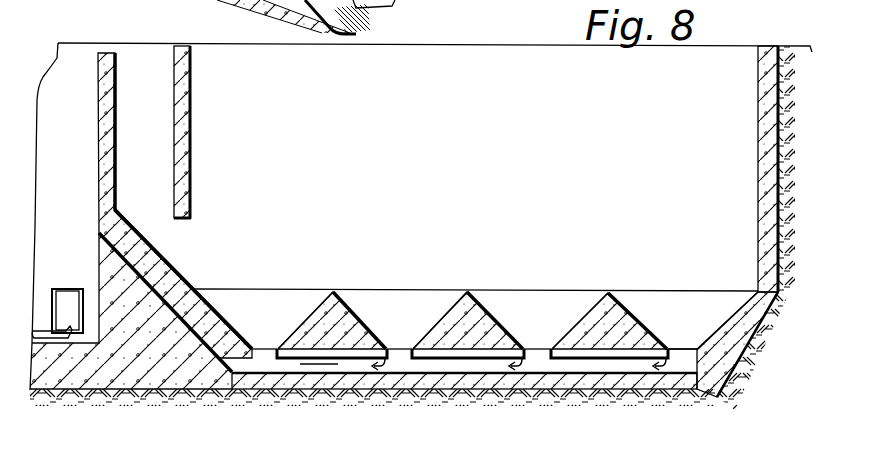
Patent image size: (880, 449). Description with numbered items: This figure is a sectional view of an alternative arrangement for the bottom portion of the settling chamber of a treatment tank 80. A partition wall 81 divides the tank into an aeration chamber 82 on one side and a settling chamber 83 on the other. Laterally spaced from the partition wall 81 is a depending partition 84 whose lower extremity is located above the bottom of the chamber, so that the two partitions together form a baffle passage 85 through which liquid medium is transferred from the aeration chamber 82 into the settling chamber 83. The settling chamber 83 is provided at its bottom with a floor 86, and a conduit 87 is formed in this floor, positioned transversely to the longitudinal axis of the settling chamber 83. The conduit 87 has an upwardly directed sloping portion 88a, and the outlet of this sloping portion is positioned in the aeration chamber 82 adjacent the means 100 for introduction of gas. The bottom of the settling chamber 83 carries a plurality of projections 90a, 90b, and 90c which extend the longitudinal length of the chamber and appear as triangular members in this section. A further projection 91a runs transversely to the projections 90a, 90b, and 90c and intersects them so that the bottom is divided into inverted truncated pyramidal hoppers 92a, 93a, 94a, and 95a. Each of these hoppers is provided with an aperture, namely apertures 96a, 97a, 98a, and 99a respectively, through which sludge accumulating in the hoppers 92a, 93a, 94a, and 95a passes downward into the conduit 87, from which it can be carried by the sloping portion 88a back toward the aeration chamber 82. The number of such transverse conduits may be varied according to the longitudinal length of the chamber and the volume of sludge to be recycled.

The tank 80 is at (768, 188).
The partition wall 81 is at (115, 122).
The aeration chamber 82 is at (80, 189).
The settling chamber 83 is at (405, 143).
The depending partition 84 is at (190, 175).
The baffle passage 85 is at (150, 210).
The floor 86 is at (680, 378).
The conduit 87 is at (637, 370).
The sloping portion 88a is at (172, 270).
The projection 90a is at (346, 313).
The projection 90b is at (484, 310).
The projection 90c is at (627, 312).
The projection 91a is at (237, 289).
The hopper 92a is at (292, 322).
The hopper 93a is at (417, 322).
The hopper 94a is at (557, 322).
The hopper 95a is at (697, 322).
The aperture 96a is at (265, 347).
The aperture 97a is at (400, 348).
The aperture 98a is at (550, 347).
The aperture 99a is at (693, 348).
The means for introduction of gas 100 is at (54, 312).